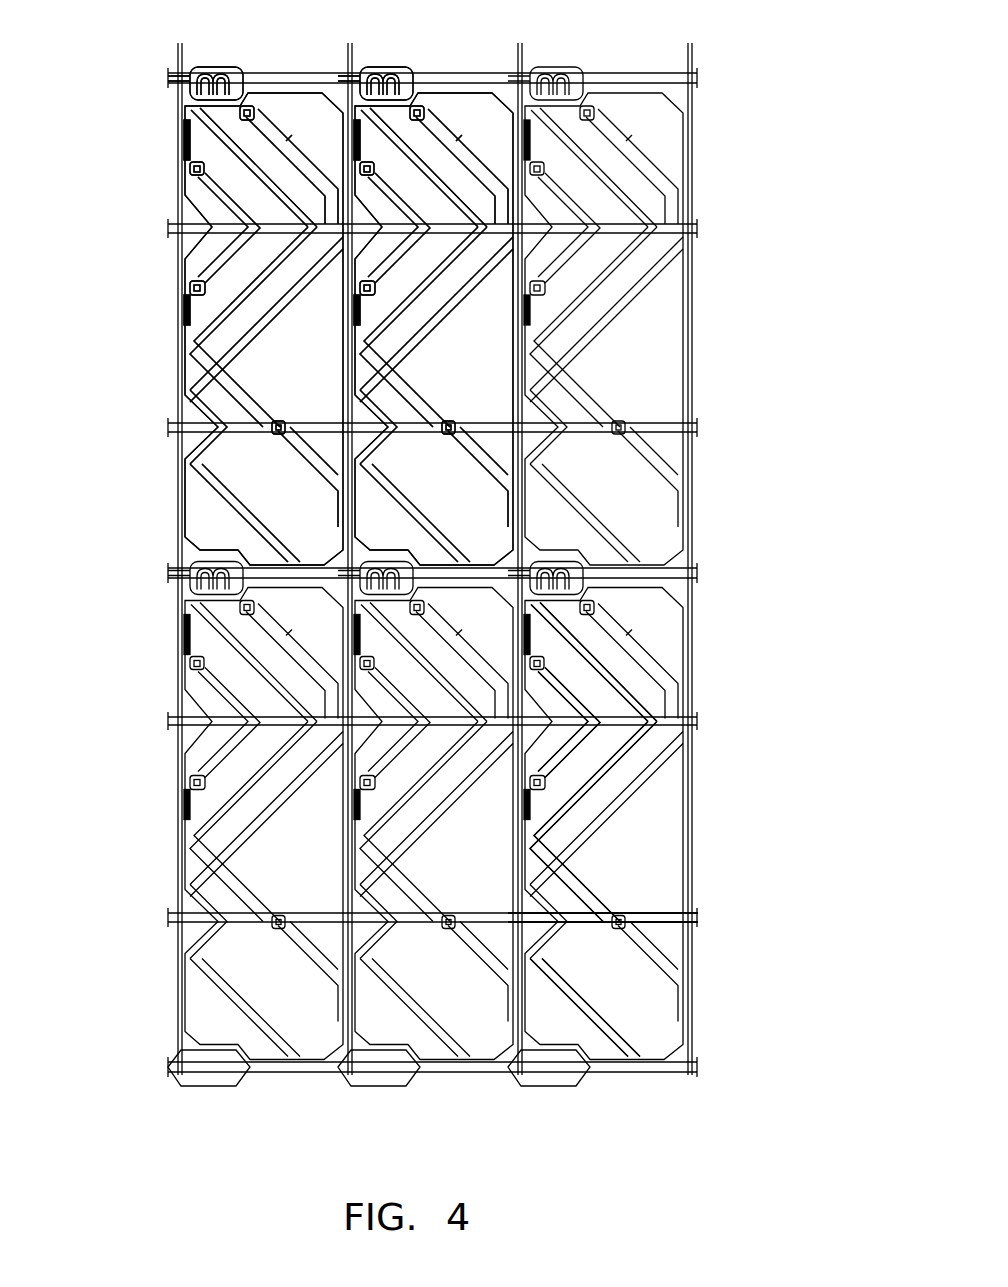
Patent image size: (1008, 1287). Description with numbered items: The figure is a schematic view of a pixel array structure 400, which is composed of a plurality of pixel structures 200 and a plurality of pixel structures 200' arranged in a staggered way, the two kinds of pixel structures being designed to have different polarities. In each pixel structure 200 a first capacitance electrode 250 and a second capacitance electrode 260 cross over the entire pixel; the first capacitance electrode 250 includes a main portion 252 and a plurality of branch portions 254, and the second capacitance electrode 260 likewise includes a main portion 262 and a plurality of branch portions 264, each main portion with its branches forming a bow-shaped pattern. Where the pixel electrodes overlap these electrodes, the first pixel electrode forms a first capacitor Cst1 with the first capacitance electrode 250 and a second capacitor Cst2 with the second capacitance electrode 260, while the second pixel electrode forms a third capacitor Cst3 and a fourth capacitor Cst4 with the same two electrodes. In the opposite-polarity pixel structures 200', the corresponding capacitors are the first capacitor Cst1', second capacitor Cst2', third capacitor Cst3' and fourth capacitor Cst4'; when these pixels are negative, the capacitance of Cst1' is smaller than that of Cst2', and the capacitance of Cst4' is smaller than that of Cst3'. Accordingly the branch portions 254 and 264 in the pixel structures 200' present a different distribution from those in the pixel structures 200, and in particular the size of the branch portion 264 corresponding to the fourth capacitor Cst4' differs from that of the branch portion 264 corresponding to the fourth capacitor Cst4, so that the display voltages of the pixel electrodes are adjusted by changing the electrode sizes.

The pixel structure 200 is at (448, 577).
The pixel structure 200' is at (507, 579).
The first capacitor Cst1 is at (194, 494).
The second capacitor Cst2 is at (198, 267).
The third capacitor Cst3 is at (200, 350).
The fourth capacitor Cst4 is at (209, 166).
The first capacitor Cst1' is at (576, 467).
The second capacitor Cst2' is at (568, 267).
The third capacitor Cst3' is at (577, 350).
The fourth capacitor Cst4' is at (606, 166).
The first capacitance electrode 250 is at (782, 905).
The main portion 252 is at (702, 906).
The branch portions 254 is at (562, 976).
The second capacitance electrode 260 is at (782, 680).
The main portion 262 is at (592, 720).
The branch portions 264 is at (582, 692).
The pixel array structure 400 is at (778, 1167).